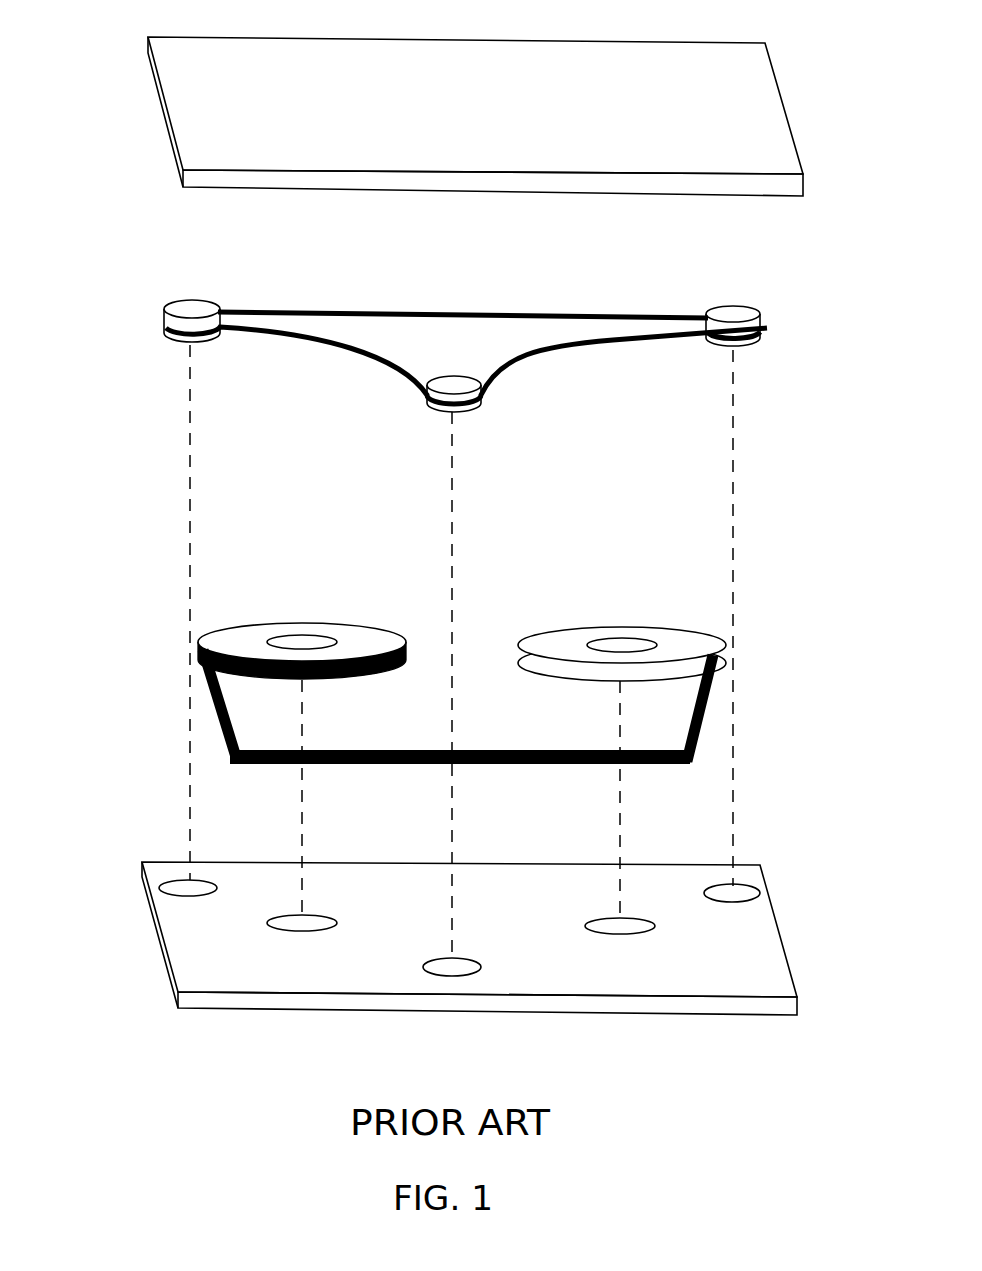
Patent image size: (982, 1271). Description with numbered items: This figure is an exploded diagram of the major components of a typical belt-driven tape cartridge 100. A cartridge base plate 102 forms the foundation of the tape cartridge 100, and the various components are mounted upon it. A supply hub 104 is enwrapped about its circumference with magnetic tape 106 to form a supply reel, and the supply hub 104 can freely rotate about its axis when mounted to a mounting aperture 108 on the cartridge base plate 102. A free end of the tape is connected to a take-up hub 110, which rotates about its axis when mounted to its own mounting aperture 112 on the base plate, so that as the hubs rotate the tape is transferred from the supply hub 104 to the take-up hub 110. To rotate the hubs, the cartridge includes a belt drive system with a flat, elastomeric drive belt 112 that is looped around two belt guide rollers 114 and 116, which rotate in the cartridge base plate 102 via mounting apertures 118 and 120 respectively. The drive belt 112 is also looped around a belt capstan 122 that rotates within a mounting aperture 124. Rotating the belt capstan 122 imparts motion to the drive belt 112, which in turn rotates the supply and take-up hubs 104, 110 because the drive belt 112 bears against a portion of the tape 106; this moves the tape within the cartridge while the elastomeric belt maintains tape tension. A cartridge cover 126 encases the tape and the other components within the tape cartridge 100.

The belt-driven tape cartridge 100 is at (94, 152).
The cartridge base plate 102 is at (778, 960).
The supply hub 104 is at (302, 640).
The magnetic tape 106 is at (412, 750).
The mounting aperture 108 is at (298, 928).
The take-up hub 110 is at (620, 643).
The drive belt 112 is at (585, 348).
The belt guide roller 114 is at (188, 310).
The belt guide roller 116 is at (733, 322).
The mounting aperture 118 is at (183, 893).
The mounting aperture 120 is at (730, 898).
The belt capstan 122 is at (440, 383).
The mounting aperture 124 is at (427, 960).
The cartridge cover 126 is at (782, 132).